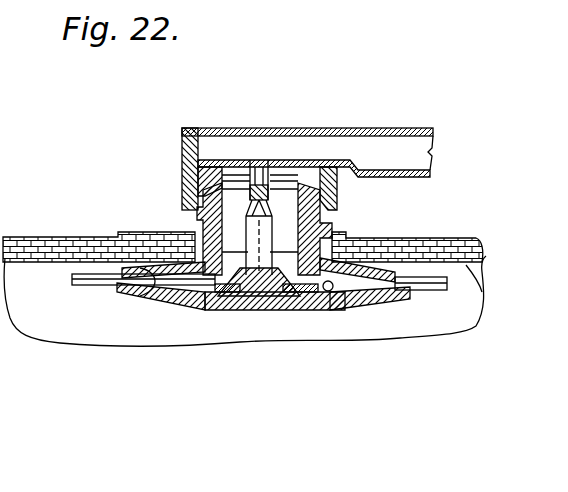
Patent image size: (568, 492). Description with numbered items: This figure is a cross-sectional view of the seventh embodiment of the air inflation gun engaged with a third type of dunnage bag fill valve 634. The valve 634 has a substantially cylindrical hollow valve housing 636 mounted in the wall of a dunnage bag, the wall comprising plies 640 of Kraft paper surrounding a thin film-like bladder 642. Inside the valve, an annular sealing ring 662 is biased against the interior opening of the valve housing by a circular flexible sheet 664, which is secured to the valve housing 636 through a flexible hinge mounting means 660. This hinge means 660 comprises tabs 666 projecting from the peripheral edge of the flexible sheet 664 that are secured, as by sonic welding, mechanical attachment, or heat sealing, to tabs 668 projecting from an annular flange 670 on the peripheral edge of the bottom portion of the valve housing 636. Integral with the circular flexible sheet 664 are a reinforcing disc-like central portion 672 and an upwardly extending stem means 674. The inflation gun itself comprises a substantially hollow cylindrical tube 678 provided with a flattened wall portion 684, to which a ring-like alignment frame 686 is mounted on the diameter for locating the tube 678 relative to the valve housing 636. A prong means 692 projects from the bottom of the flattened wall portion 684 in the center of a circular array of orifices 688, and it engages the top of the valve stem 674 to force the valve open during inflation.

The dunnage bag fill valve 634 is at (172, 217).
The valve housing 636 is at (258, 239).
The plies 640 is at (488, 260).
The bladder 642 is at (490, 270).
The flexible hinge mounting means 660 is at (410, 310).
The annular sealing ring 662 is at (320, 312).
The circular flexible sheet 664 is at (346, 306).
The tabs 666 is at (440, 290).
The tabs 668 is at (480, 289).
The annular flange 670 is at (140, 288).
The reinforcing disc-like central portion 672 is at (255, 312).
The stem means 674 is at (322, 222).
The tube 678 is at (410, 130).
The flattened wall portion 684 is at (312, 162).
The alignment frame 686 is at (338, 189).
The orifices 688 is at (282, 162).
The prong means 692 is at (198, 170).